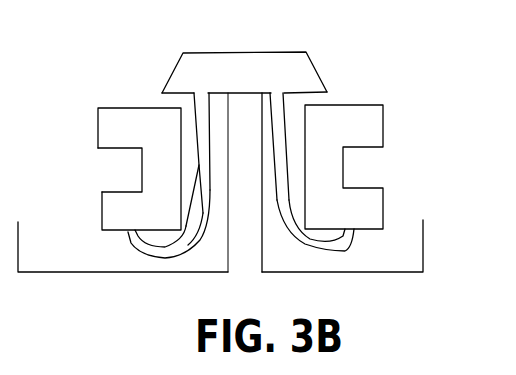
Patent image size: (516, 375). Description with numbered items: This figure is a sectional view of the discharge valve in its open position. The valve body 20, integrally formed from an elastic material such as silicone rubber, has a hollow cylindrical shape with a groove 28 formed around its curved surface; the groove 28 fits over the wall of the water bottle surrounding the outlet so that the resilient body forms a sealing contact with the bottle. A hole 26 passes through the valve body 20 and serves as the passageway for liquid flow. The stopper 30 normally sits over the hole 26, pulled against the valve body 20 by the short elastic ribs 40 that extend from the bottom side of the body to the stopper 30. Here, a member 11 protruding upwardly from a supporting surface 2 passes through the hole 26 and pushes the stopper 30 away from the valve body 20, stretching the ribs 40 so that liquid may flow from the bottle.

The panel / support member 2 is at (59, 252).
The member 11 is at (245, 255).
The valve body 20 is at (115, 117).
The hole 26 is at (257, 125).
The groove 28 is at (115, 174).
The stopper 30 is at (193, 73).
The elastic ribs 40 is at (328, 248).